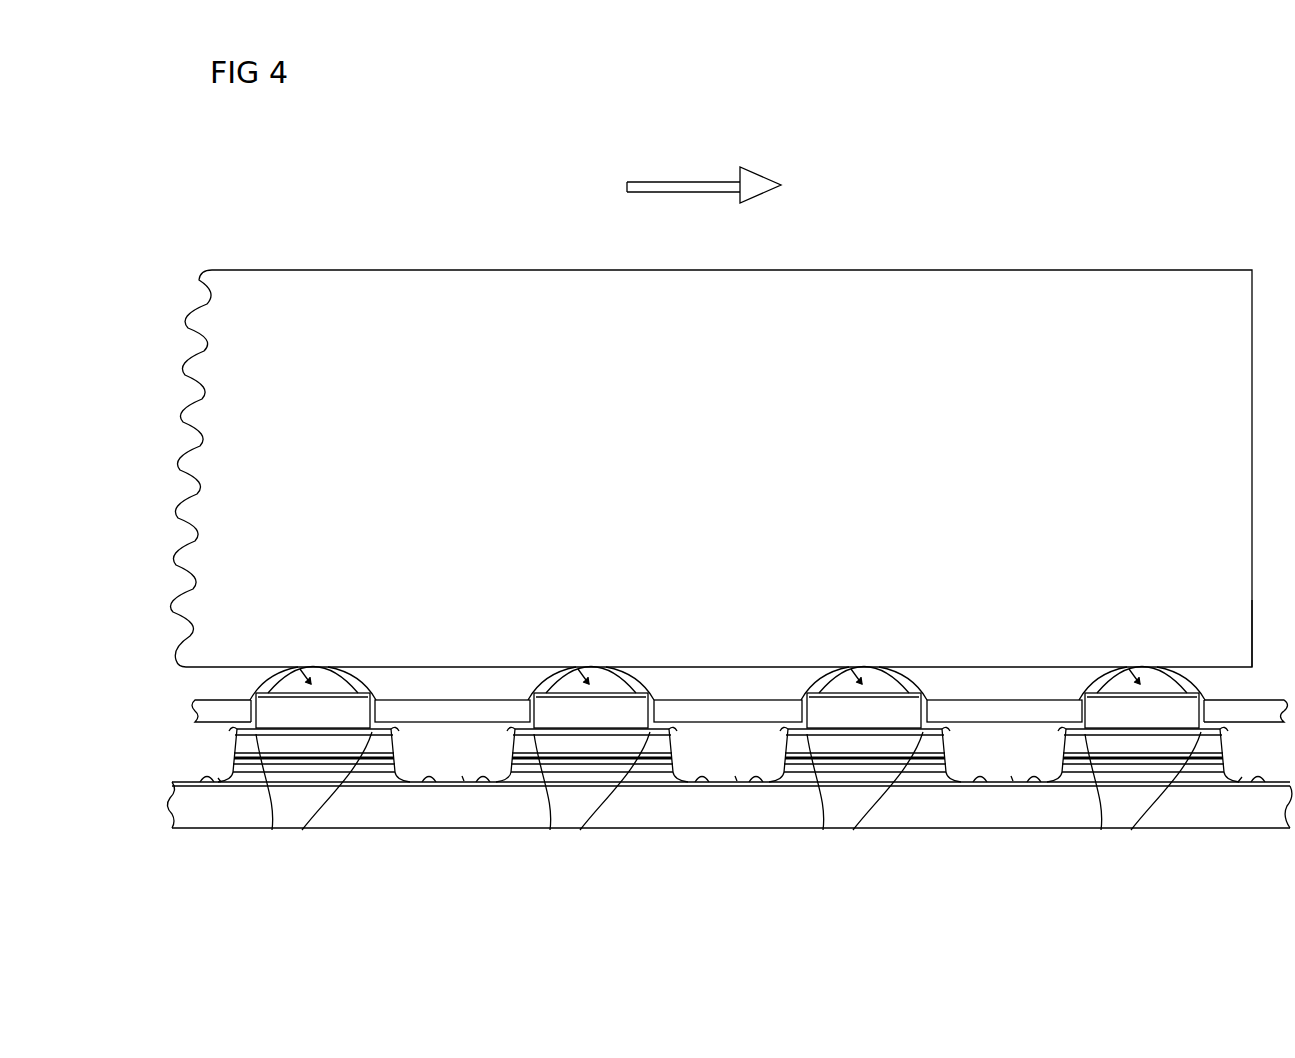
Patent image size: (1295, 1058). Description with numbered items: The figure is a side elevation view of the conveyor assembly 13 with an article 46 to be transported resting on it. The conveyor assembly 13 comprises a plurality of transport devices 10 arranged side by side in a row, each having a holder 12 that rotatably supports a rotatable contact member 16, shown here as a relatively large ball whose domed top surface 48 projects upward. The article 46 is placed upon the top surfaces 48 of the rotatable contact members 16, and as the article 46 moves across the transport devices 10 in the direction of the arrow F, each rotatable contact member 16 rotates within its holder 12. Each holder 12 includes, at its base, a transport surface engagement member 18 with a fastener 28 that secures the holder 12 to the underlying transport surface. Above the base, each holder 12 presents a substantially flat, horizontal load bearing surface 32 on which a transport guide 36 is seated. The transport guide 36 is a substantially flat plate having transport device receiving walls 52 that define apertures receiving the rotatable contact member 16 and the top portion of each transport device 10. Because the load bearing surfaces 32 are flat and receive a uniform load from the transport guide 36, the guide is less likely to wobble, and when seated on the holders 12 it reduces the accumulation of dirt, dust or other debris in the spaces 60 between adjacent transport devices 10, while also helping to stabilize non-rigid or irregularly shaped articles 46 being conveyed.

The transport device 10 is at (230, 687).
The holder 12 is at (1229, 757).
The conveyor assembly 13 is at (1266, 642).
The rotatable contact member 16 is at (1130, 664).
The transport surface engagement member 18 is at (728, 767).
The fastener 28 is at (1256, 778).
The load bearing surface 32 is at (1222, 731).
The transport guide 36 is at (1262, 712).
The article 46 is at (385, 266).
The top surface 48 is at (1190, 674).
The transport device receiving walls 52 is at (249, 698).
The spaces 60 is at (1018, 751).
The force direction F is at (725, 185).